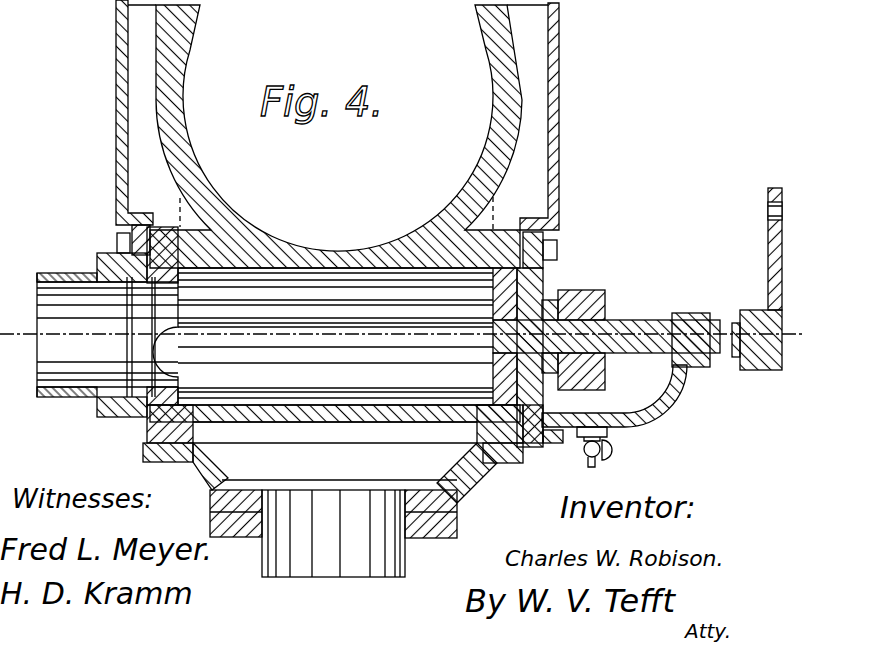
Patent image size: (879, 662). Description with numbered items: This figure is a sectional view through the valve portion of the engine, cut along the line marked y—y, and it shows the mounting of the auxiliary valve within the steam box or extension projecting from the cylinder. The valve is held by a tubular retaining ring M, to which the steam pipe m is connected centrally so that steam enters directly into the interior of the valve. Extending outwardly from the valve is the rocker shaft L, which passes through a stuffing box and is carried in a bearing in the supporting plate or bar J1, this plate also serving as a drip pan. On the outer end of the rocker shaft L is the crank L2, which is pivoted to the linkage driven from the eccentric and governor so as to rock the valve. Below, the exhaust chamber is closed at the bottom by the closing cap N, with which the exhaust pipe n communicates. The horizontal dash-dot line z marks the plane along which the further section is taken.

The tubular retaining ring M is at (100, 267).
The steam pipe m is at (50, 283).
The section line z— z is at (402, 329).
The rocker shaft L is at (637, 320).
The crank L2 is at (773, 247).
The supporting plate or bar J1 is at (672, 398).
The closing cap N is at (468, 470).
The exhaust pipe n is at (450, 515).